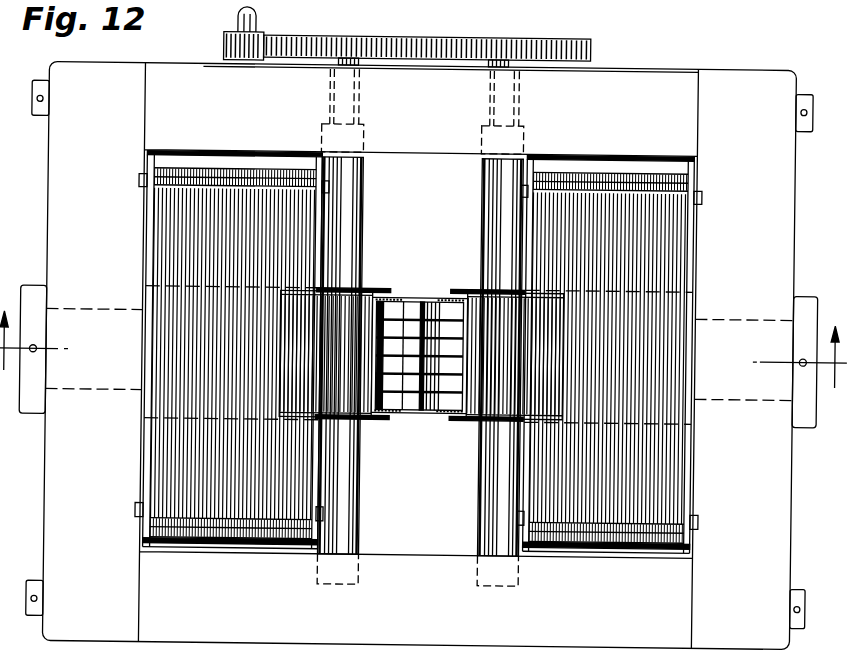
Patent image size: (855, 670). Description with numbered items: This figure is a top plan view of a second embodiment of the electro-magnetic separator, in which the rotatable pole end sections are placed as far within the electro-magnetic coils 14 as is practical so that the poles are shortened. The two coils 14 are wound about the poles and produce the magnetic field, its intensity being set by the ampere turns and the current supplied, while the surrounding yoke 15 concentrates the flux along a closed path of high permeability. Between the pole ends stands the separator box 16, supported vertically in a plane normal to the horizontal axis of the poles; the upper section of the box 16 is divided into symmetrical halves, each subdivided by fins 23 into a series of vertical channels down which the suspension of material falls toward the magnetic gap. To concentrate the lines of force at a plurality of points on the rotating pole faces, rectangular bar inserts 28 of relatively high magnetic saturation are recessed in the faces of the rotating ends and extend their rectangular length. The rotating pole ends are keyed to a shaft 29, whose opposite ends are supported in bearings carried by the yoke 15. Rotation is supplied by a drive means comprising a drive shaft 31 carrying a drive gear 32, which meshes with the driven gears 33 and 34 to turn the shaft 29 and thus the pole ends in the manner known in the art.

The electro-magnetic coil 14 is at (231, 173).
The yoke 15 is at (426, 355).
The separator box 16 is at (424, 310).
The fin 23 is at (393, 333).
The insert 28 is at (353, 415).
The shaft 29 is at (363, 199).
The drive shaft 31 is at (233, 18).
The drive gear 32 is at (226, 50).
The driven gear 33 is at (350, 37).
The driven gear 34 is at (502, 40).